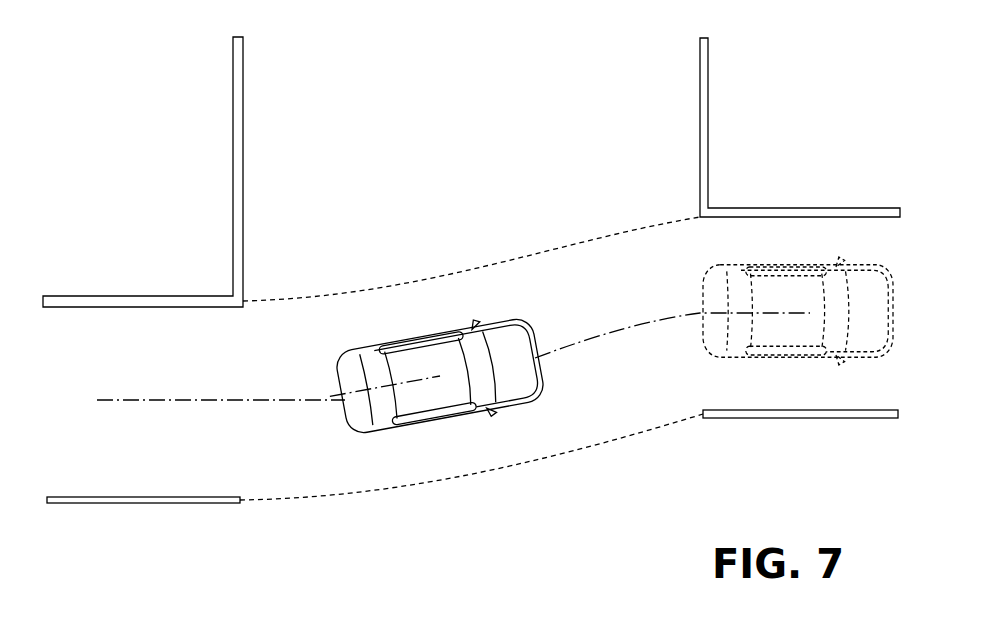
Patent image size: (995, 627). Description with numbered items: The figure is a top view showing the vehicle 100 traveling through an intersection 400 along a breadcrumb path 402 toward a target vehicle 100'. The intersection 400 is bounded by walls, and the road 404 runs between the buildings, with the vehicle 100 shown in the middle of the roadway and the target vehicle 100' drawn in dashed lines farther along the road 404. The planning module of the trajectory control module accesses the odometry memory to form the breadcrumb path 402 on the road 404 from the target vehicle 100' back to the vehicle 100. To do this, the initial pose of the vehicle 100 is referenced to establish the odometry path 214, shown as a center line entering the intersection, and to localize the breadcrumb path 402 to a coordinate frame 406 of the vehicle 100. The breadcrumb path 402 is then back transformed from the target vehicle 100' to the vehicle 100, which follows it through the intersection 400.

The intersection 400 is at (538, 108).
The road 404 is at (626, 244).
The coordinate frame 406 is at (476, 452).
The odometry path 214 is at (248, 400).
The breadcrumb path 402 is at (680, 314).
The vehicle 100 is at (447, 354).
The target vehicle 100' is at (833, 314).